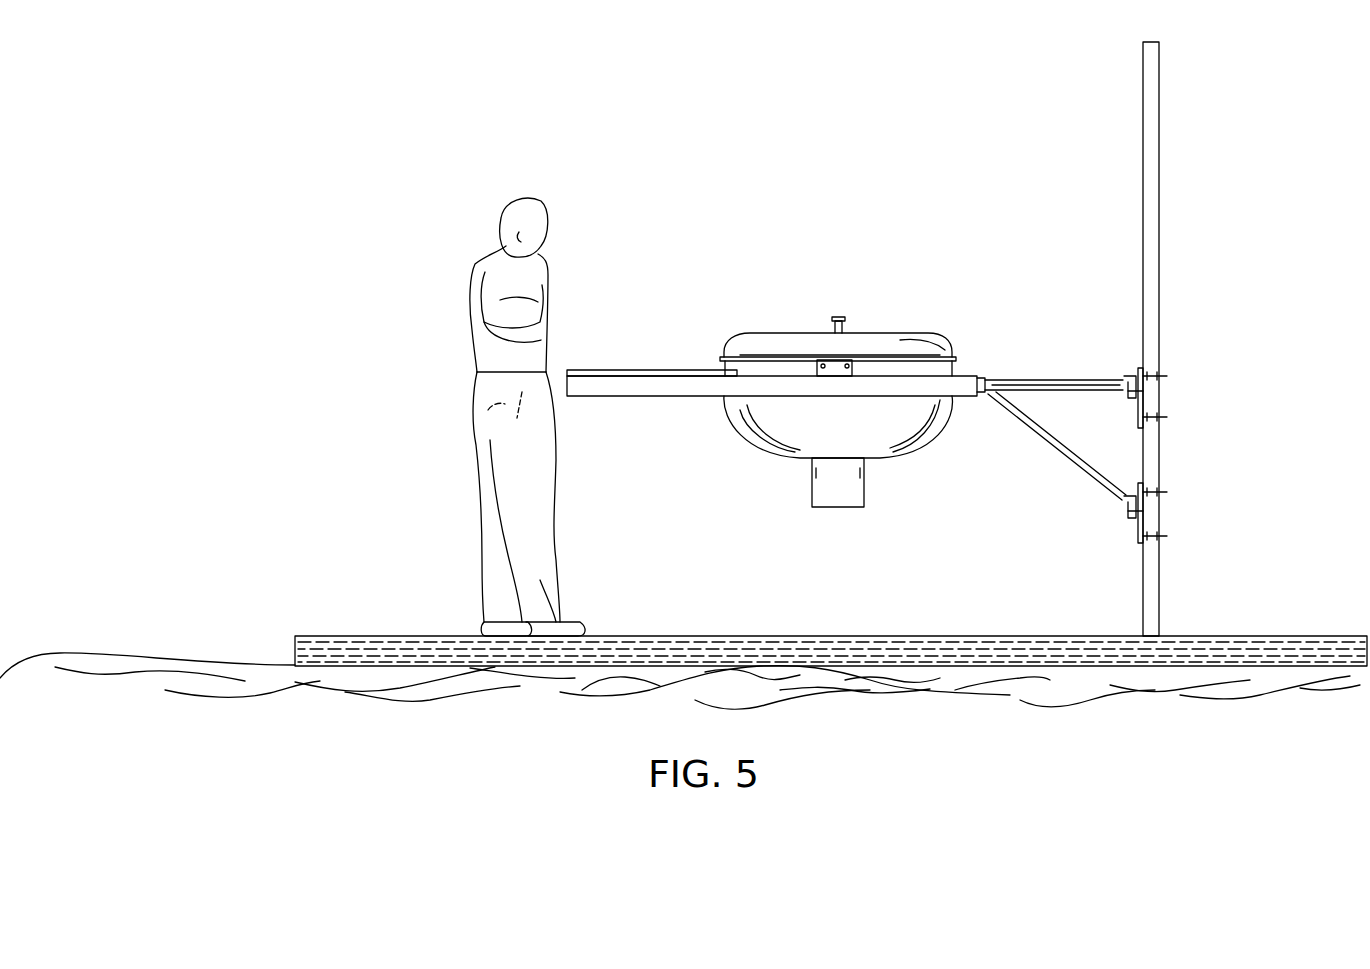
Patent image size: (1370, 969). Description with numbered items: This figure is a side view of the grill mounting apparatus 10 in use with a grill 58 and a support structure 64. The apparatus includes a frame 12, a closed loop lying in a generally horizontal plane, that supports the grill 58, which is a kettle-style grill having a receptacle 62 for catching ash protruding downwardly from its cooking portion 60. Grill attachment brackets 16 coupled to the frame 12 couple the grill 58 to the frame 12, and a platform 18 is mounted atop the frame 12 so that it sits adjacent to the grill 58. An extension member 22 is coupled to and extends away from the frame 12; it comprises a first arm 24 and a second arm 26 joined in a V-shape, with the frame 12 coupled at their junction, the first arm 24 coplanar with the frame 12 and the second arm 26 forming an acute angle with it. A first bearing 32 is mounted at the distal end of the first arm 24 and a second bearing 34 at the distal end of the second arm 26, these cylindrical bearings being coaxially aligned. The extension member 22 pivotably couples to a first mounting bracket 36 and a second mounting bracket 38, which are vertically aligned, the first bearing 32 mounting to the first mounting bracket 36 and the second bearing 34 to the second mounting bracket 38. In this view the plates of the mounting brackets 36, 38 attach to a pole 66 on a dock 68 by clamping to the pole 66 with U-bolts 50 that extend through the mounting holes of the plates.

The grill mounting apparatus 10 is at (919, 339).
The frame 12 is at (714, 390).
The grill attachment brackets 16 is at (834, 360).
The platform 18 is at (636, 375).
The extension member 22 is at (1125, 410).
The first arm 24 is at (1078, 388).
The second arm 26 is at (1046, 445).
The first bearing 32 is at (1124, 388).
The second bearing 34 is at (1122, 503).
The first mounting bracket 36 is at (1140, 406).
The second mounting bracket 38 is at (1140, 524).
The U-bolts 50 is at (1167, 376).
The grill 58 is at (872, 322).
The cooking portion 60 is at (928, 344).
The receptacle 62 is at (845, 487).
The support structure 64 is at (1122, 339).
The pole 66 is at (1157, 242).
The dock 68 is at (1262, 636).